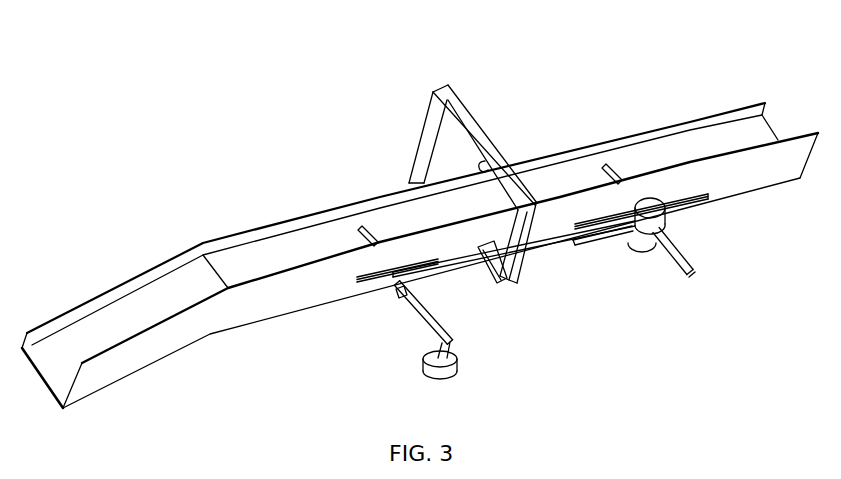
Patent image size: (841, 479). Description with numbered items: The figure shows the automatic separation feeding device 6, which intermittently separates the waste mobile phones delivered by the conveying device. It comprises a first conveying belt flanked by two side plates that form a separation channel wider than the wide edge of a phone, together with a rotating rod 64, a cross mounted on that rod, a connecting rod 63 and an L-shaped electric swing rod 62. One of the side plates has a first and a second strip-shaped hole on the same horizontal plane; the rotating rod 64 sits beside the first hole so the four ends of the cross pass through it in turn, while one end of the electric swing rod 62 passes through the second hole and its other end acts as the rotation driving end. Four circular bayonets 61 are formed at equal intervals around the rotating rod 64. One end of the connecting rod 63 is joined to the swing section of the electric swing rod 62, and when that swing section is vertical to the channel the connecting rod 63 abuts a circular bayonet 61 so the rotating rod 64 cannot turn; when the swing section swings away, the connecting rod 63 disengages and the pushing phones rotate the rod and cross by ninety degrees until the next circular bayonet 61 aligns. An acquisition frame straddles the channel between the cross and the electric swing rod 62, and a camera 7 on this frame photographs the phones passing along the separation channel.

The automatic separation feeding device 6 is at (559, 230).
The circular bayonet 61 is at (667, 235).
The electric swing rod 62 is at (397, 283).
The connecting rod 63 is at (473, 258).
The rotating rod 64 is at (690, 196).
The camera 7 is at (487, 163).